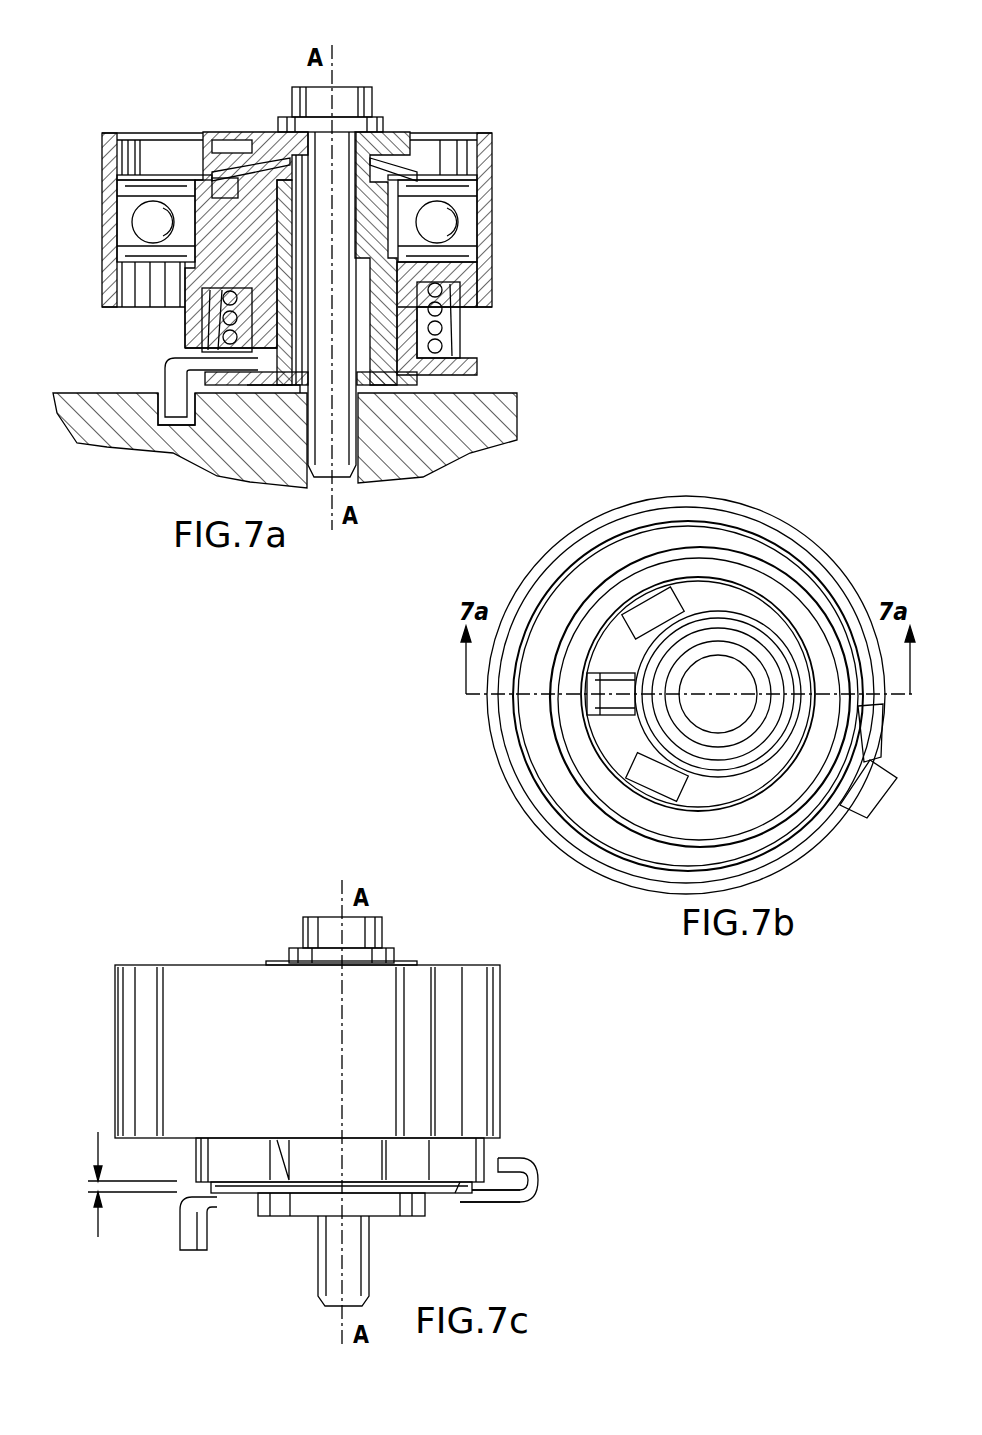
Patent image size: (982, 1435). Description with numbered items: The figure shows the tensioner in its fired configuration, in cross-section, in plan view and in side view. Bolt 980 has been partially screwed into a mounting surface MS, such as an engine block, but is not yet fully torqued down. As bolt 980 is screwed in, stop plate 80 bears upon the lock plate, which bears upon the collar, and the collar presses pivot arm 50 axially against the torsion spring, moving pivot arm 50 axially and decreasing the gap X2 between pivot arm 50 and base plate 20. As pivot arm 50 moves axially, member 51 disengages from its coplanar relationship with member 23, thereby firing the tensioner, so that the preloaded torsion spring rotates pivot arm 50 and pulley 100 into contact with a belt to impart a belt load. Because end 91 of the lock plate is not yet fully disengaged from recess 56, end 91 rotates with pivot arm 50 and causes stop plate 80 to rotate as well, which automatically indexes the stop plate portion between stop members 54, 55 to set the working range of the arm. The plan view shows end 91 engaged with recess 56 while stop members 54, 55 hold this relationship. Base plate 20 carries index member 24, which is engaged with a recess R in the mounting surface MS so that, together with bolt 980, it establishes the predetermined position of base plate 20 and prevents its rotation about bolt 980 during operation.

In FIG. 7A, the stop plate 80 is at (393, 131).
In FIG. 7A, the end 91 is at (213, 172).
In FIG. 7B, the end 91 is at (622, 705).
In FIG. 7A, the recess 56 is at (226, 190).
In FIG. 7A, the index member 24 is at (165, 385).
In FIG. 7C, the index member 24 is at (178, 1237).
In FIG. 7A, the recess R is at (197, 412).
In FIG. 7A, the mounting surface MS is at (378, 437).
In FIG. 7B, the stop member 55 is at (657, 612).
In FIG. 7B, the bolt 980 is at (727, 677).
In FIG. 7B, the stop member 54 is at (653, 772).
In FIG. 7C, the pulley 100 is at (500, 1040).
In FIG. 7C, the pivot arm 50 is at (197, 1158).
In FIG. 7C, the base plate 20 is at (440, 1200).
In FIG. 7C, the member 23 is at (538, 1167).
In FIG. 7C, the member 51 is at (510, 1198).
In FIG. 7C, the gap X2 is at (115, 1184).